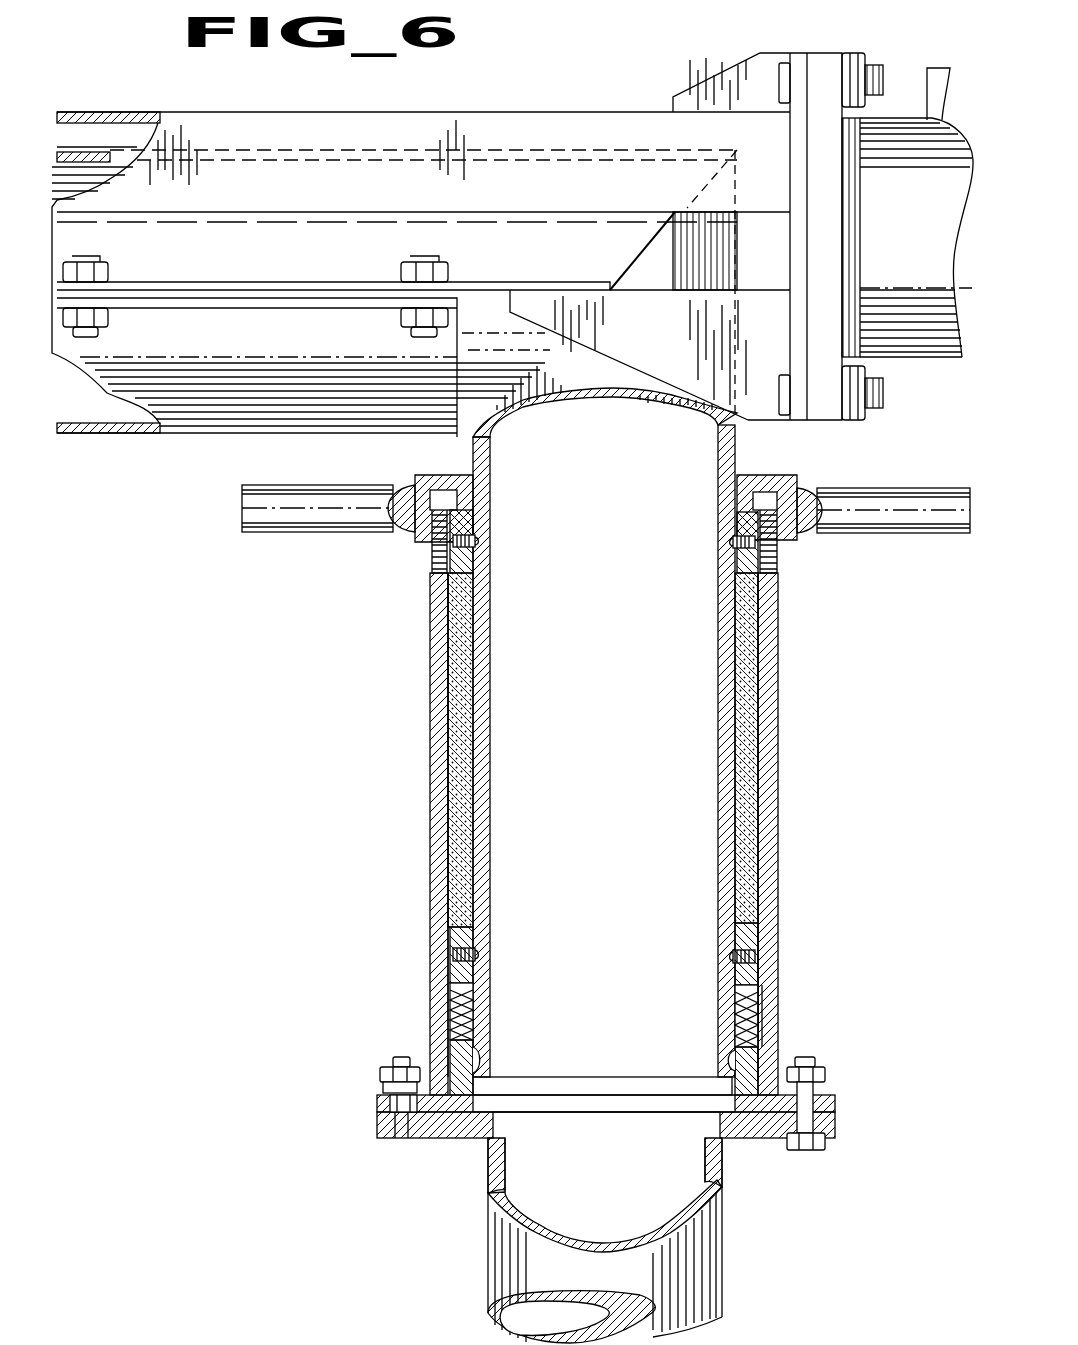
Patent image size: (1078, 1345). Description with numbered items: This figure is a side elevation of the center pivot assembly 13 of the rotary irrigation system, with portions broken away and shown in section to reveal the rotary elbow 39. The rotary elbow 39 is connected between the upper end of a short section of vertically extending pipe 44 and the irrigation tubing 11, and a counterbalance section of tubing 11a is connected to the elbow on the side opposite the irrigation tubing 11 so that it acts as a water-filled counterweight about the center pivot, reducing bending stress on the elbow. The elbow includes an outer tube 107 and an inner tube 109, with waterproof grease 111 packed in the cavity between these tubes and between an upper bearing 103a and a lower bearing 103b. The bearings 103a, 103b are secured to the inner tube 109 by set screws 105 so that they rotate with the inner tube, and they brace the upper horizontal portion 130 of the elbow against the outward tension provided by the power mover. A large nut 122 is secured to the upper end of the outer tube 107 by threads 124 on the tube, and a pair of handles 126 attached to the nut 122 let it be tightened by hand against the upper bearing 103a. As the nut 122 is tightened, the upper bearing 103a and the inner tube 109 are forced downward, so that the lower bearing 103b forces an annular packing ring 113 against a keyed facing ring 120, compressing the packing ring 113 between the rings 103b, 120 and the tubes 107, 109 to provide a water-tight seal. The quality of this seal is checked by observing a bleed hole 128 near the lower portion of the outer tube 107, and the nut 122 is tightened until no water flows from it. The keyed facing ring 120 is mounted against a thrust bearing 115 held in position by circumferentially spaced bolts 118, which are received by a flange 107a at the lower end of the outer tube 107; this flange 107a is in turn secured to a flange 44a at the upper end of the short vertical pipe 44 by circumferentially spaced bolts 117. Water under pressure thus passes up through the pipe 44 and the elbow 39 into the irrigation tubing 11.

The irrigation tubing 11 is at (107, 413).
The counterbalance section of tubing 11a is at (905, 348).
The center pivot assembly 13 is at (292, 677).
The rotary elbow 39 is at (755, 450).
The short section of vertically extending pipe 44 is at (496, 1230).
The flange 44a is at (826, 1129).
The upper bearing 103a is at (757, 568).
The lower bearing 103b is at (455, 930).
The set screws 105 is at (480, 540).
The outer tube 107 is at (778, 690).
The flange 107a is at (825, 1083).
The inner tube 109 is at (738, 650).
The waterproof grease 111 is at (446, 708).
The annular packing ring 113 is at (455, 996).
The thrust bearing 115 is at (426, 1120).
The bolts 117 is at (812, 1101).
The bolts 118 is at (385, 1082).
The keyed facing ring 120 is at (455, 1050).
The large nut 122 is at (445, 476).
The threads 124 is at (435, 550).
The handles 126 is at (247, 508).
The bleed hole 128 is at (762, 1002).
The upper horizontal portion 130 is at (497, 124).